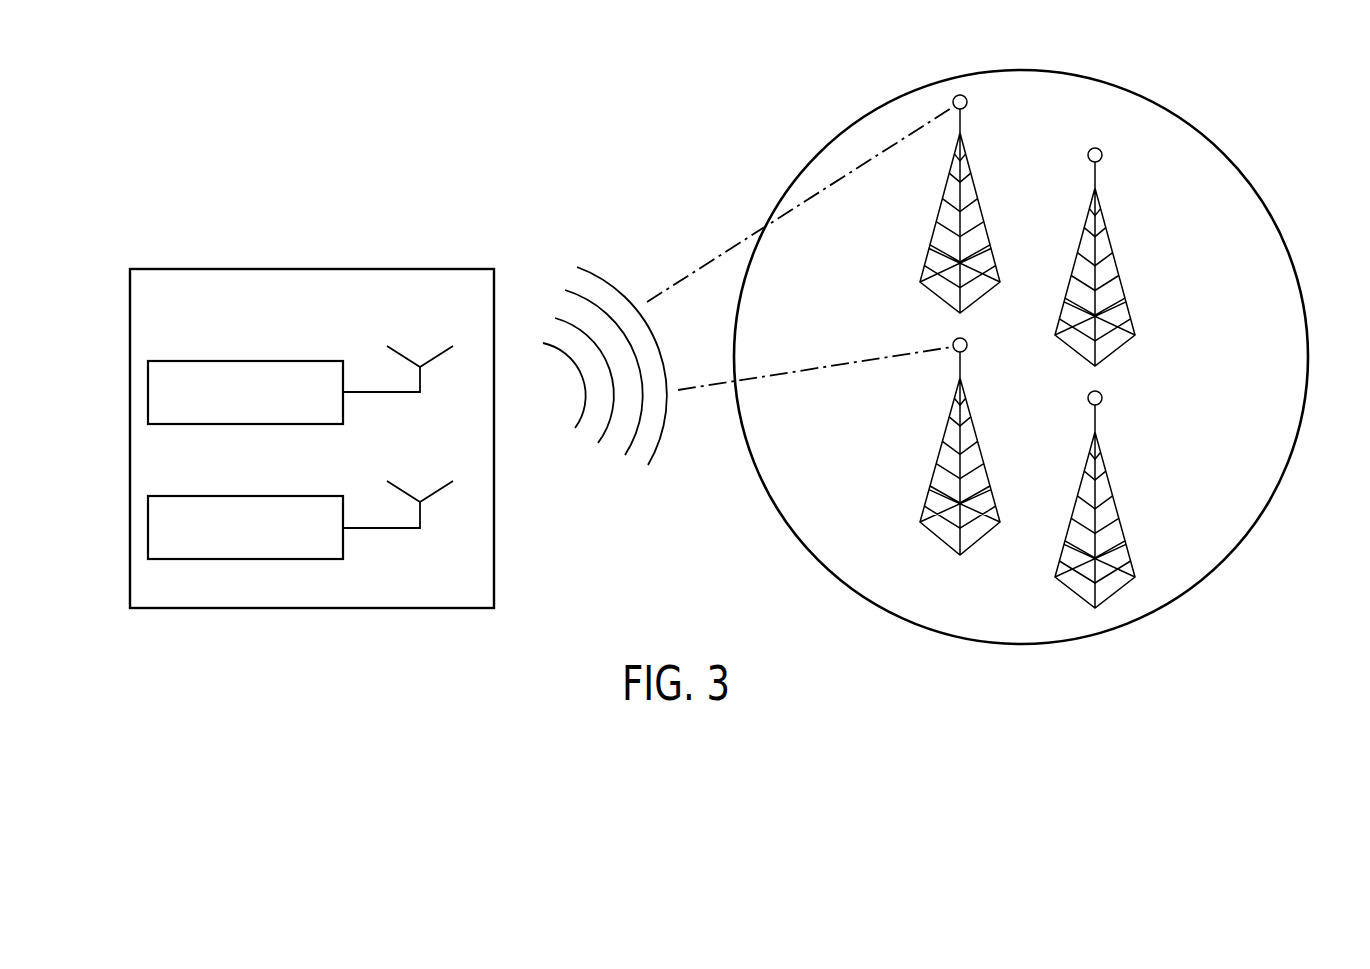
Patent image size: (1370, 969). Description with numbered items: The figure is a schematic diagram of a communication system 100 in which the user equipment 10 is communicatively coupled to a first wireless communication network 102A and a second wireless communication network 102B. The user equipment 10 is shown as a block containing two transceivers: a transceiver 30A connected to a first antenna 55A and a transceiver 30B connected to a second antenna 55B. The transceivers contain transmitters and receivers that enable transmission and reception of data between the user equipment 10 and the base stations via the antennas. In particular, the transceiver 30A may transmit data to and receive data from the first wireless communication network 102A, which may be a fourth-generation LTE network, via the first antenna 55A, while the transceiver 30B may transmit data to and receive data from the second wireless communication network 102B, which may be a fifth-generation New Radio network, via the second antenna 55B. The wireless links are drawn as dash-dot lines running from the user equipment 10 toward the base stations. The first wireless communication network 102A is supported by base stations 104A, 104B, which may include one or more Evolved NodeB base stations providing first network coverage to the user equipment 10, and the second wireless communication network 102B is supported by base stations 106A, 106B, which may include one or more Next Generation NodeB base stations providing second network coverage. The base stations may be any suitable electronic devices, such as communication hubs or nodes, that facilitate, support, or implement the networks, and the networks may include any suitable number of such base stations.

The user equipment 10 is at (312, 268).
The transceiver 30A is at (247, 424).
The transceiver 30B is at (247, 559).
The first antenna 55A is at (434, 357).
The second antenna 55B is at (434, 497).
The communication system 100 is at (638, 173).
The first wireless communication network 102A is at (850, 390).
The second wireless communication network 102B is at (888, 127).
The base station 104A is at (933, 533).
The base station 104B is at (1113, 352).
The base station 106A is at (1113, 502).
The base station 106B is at (978, 207).